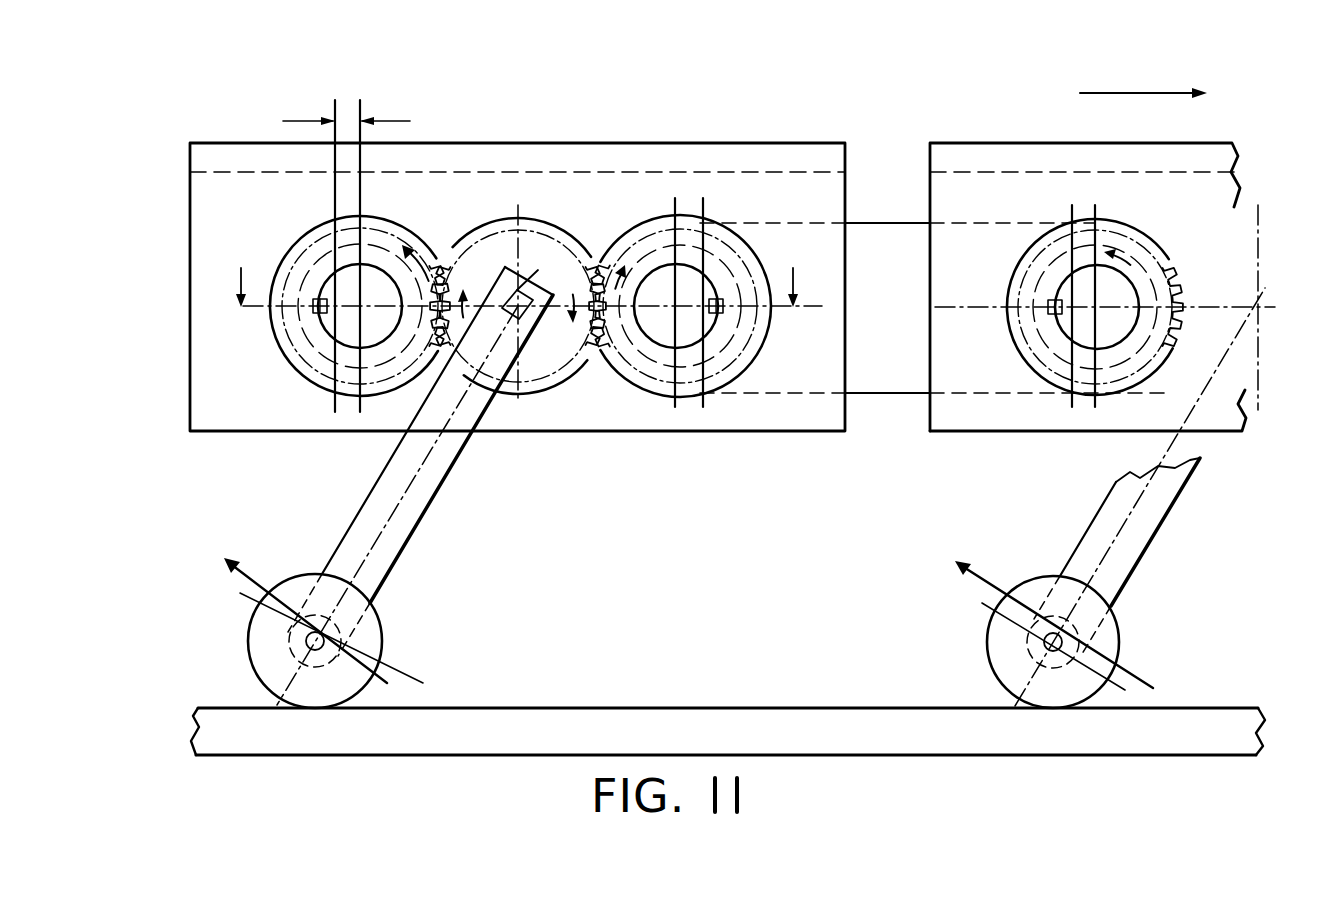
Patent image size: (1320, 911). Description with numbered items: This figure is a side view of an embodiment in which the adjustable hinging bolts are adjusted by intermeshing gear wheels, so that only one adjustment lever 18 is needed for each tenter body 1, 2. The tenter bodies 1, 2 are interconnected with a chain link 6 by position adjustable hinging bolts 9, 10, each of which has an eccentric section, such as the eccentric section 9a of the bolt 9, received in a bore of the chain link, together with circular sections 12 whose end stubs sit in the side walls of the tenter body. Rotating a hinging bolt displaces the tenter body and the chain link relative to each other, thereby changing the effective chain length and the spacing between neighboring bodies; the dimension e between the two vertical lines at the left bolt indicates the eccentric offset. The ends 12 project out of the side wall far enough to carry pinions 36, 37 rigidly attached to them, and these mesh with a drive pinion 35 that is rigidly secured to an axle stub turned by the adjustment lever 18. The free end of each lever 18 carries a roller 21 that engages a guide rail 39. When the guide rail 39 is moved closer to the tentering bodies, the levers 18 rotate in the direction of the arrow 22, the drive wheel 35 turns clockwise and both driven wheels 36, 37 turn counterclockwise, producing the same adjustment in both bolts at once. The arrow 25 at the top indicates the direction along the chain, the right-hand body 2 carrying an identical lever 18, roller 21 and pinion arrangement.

The tenter body 1 is at (543, 160).
The tenter body 2 is at (1037, 163).
The chain link 6 is at (877, 367).
The position adjustable hinging bolt 9 is at (307, 337).
The eccentric section 9a is at (1028, 291).
The position adjustable hinging bolt 10 is at (715, 350).
The circular end stub 12 is at (241, 288).
The adjustment lever 18 is at (377, 558).
The roller 21 is at (368, 646).
The arrow 22 is at (226, 560).
The travel direction 25 is at (1138, 93).
The drive pinion 35 is at (532, 357).
The pinion 36 is at (632, 387).
The pinion 37 is at (377, 368).
The guide rail 39 is at (1147, 742).
The eccentricity e is at (346, 109).